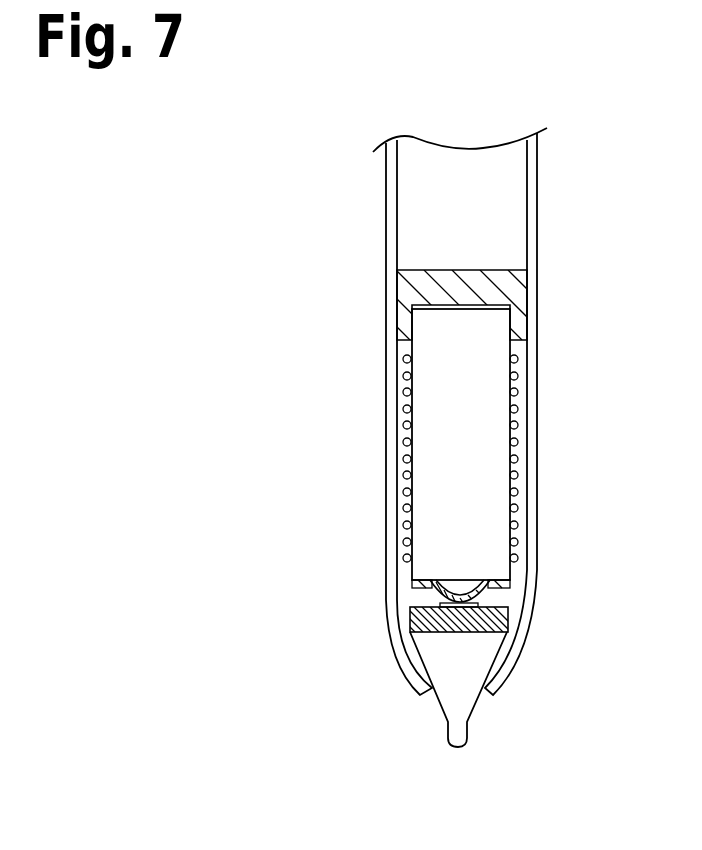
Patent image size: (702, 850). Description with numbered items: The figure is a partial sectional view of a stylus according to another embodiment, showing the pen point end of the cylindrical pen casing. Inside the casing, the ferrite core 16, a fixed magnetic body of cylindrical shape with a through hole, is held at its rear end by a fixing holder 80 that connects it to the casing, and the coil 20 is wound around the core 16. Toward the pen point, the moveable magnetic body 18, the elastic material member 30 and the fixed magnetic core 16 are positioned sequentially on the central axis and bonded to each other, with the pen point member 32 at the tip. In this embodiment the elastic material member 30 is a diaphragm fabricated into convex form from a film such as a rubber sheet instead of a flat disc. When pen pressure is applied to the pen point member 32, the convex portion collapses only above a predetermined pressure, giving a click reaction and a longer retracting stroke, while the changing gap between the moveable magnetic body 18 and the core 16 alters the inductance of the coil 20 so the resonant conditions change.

The fixing holder 80 is at (512, 282).
The ferrite core 16 is at (485, 470).
The coil 20 is at (517, 438).
The elastic material member 30 is at (487, 597).
The moveable magnetic body 18 is at (505, 615).
The pen point member 32 is at (473, 662).